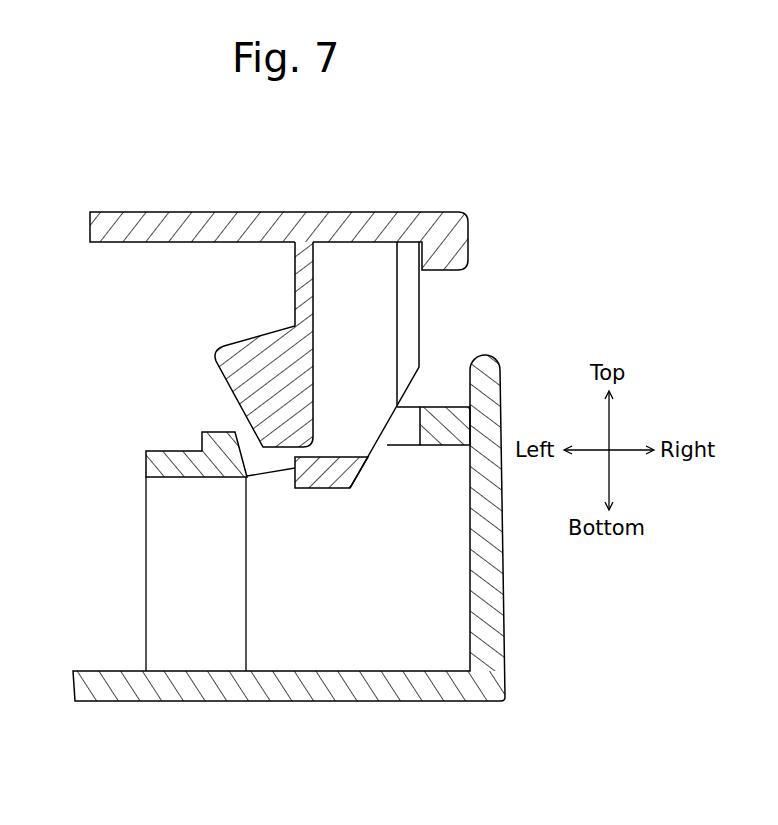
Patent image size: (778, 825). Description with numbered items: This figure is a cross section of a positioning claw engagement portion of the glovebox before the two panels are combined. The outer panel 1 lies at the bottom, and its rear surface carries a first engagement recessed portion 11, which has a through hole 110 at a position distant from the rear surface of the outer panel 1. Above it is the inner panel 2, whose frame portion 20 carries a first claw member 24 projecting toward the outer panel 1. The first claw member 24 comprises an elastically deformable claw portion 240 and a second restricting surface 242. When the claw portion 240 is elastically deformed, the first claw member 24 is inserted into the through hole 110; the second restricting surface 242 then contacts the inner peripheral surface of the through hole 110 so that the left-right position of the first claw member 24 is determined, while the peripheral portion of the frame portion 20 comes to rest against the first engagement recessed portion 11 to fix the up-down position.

The outer panel 1 is at (281, 568).
The inner panel 2 is at (279, 209).
The frame portion 20 is at (197, 216).
The first claw member 24 is at (314, 365).
The claw portion 240 is at (219, 363).
The second restricting surface 242 is at (420, 315).
The first engagement recessed portion 11 is at (187, 456).
The through hole 110 is at (420, 408).